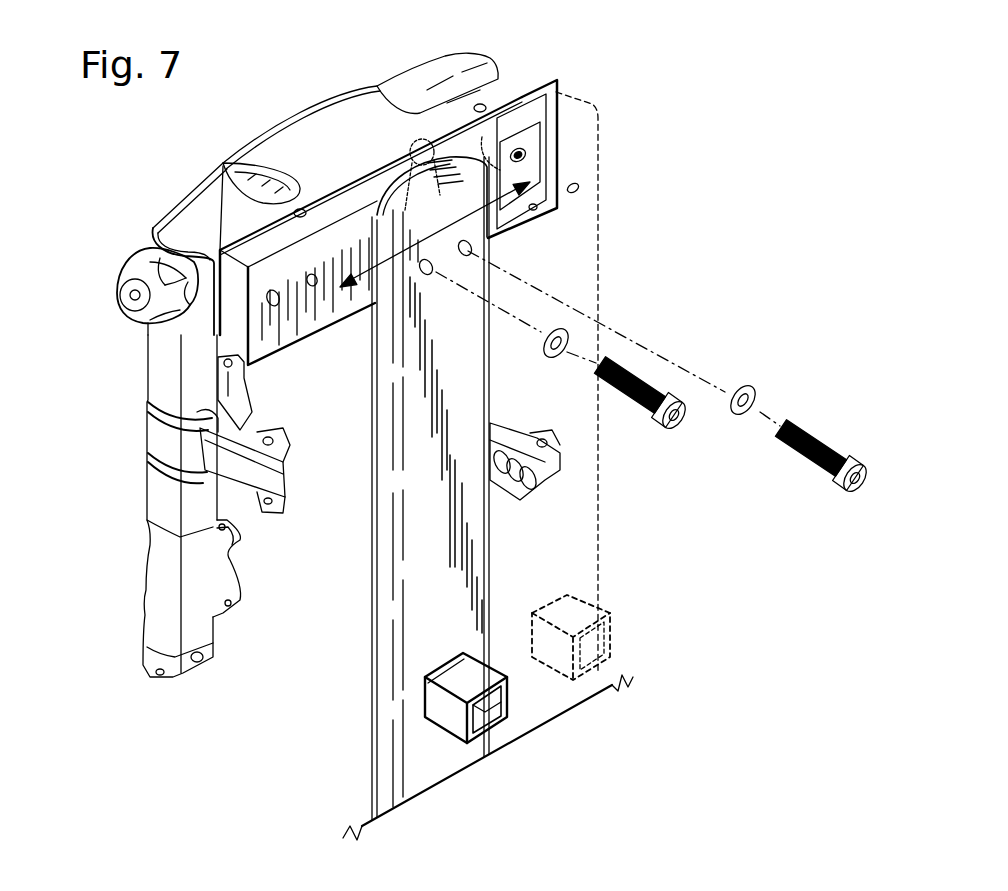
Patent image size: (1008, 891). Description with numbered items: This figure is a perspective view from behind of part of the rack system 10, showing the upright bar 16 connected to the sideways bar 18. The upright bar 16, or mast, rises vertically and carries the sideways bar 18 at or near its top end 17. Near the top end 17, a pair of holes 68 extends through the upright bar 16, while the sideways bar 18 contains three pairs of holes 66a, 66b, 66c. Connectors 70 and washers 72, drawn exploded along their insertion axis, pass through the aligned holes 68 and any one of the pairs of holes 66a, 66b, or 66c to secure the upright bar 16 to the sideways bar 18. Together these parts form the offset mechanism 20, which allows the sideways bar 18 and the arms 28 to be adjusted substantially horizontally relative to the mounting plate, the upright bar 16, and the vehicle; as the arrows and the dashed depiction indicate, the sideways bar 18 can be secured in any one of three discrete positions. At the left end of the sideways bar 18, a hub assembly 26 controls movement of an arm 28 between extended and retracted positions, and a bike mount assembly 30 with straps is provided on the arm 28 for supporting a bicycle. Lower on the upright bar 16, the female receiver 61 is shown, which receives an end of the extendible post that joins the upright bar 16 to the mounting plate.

The rack system 10 is at (165, 139).
The upright bar 16 is at (443, 552).
The top end 17 is at (374, 190).
The sideways bar 18 is at (230, 310).
The offset mechanism 20 is at (641, 121).
The hub assembly 26 is at (124, 254).
The arm 28 is at (158, 550).
The bike mount assembly 30 is at (295, 477).
The female receiver 61 is at (567, 610).
The first pair of holes 66a is at (292, 302).
The second pair of holes 66b is at (406, 214).
The third pair of holes 66c is at (496, 157).
The pair of holes 68 is at (473, 203).
The connector 70 is at (668, 430).
The washer 72 is at (556, 361).